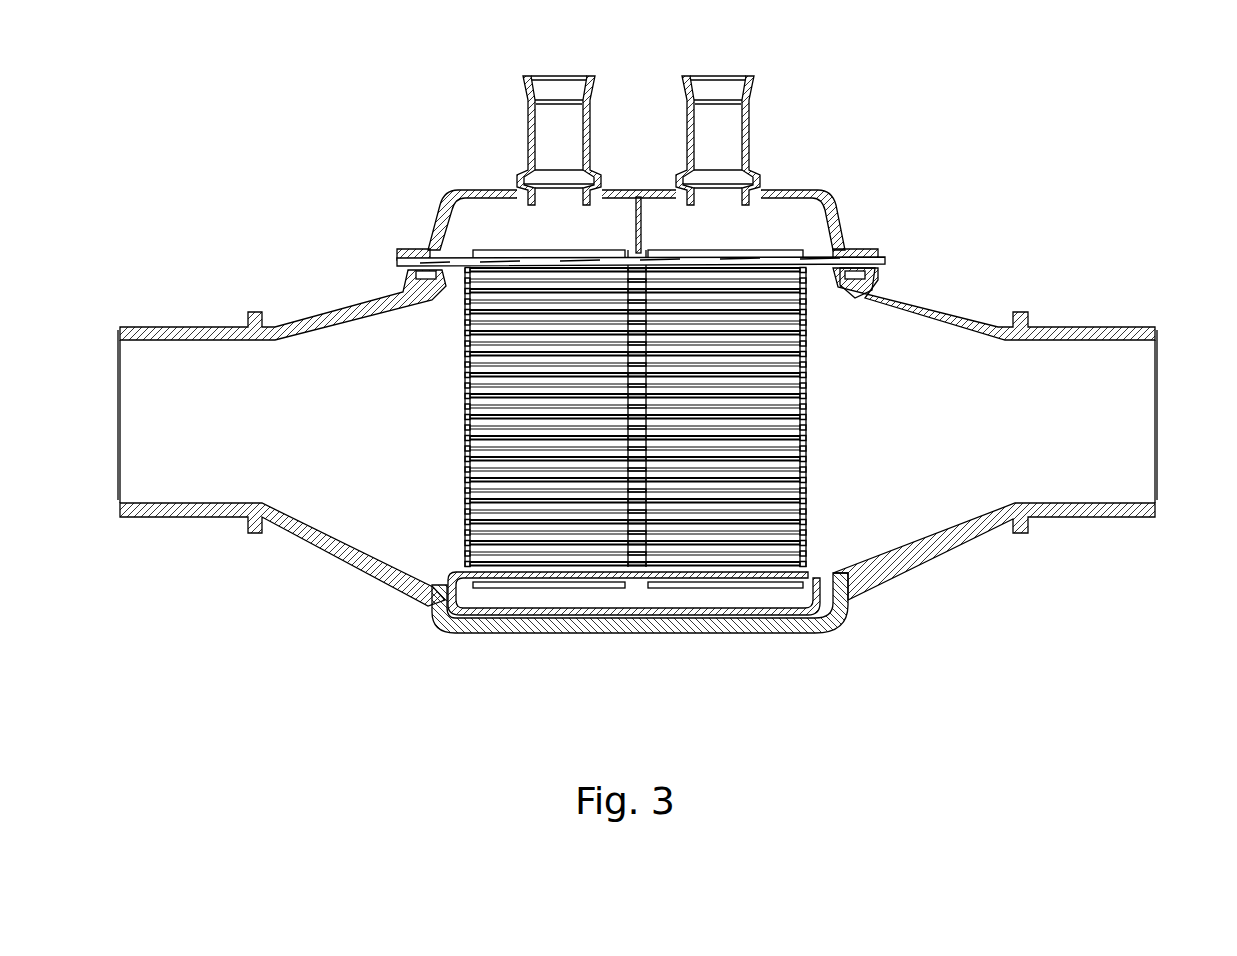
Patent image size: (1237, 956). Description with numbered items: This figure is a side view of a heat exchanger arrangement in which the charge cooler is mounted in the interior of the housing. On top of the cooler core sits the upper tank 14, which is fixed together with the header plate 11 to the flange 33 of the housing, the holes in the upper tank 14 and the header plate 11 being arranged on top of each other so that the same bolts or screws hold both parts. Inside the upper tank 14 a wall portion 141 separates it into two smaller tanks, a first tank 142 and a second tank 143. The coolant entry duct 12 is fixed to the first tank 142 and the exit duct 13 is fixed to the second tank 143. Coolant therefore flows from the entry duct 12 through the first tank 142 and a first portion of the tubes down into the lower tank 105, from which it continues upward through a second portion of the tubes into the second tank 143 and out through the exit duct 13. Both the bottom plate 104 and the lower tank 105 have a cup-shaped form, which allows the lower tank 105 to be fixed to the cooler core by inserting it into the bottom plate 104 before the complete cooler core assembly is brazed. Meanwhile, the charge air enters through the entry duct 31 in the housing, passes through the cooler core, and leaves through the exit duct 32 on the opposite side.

The header plate 11 is at (398, 260).
The coolant entry duct 12 is at (523, 90).
The exit duct 13 is at (753, 85).
The upper tank 14 is at (505, 187).
The wall portion 141 is at (640, 220).
The first tank 142 is at (470, 228).
The second tank 143 is at (758, 228).
The entry duct 31 is at (167, 332).
The exit duct 32 is at (1077, 332).
The flange 33 is at (873, 268).
The bottom plate 104 is at (813, 573).
The lower tank 105 is at (755, 610).